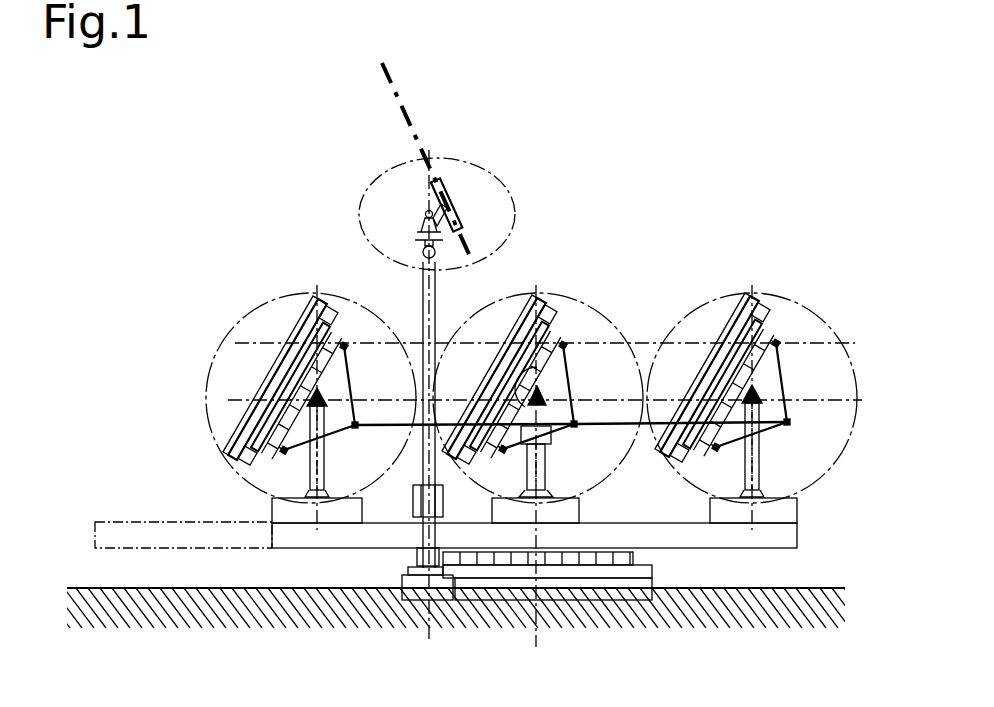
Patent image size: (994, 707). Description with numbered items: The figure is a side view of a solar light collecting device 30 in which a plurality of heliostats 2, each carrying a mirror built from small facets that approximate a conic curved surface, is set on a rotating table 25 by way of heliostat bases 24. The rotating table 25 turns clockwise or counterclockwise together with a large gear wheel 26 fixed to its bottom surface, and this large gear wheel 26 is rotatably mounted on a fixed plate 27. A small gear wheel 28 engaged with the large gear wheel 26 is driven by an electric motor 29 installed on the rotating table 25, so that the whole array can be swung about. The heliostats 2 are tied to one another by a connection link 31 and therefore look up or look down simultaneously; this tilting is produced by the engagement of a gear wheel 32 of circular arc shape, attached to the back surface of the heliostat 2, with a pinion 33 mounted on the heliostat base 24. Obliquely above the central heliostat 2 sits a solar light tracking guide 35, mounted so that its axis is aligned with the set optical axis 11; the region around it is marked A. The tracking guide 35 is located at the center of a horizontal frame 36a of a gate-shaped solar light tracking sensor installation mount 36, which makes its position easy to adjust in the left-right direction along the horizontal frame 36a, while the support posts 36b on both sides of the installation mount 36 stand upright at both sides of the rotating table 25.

The heliostat 2 is at (240, 384).
The optical axis 11 is at (386, 66).
The heliostat base 24 is at (552, 470).
The rotating table 25 is at (712, 537).
The large gear wheel 26 is at (652, 562).
The fixed plate 27 is at (497, 592).
The small gear wheel 28 is at (403, 558).
The electric motor 29 is at (405, 503).
The solar light collecting device 30 is at (302, 269).
The connection link 31 is at (390, 418).
The gear wheel having a circular arc shape 32 is at (562, 375).
The pinion 33 is at (552, 444).
The solar light tracking guide 35 is at (447, 170).
The solar light tracking sensor installation mount 36 is at (462, 435).
The horizontal frame 36a is at (413, 253).
The support posts 36b is at (420, 303).
The sensor unit region A is at (514, 206).